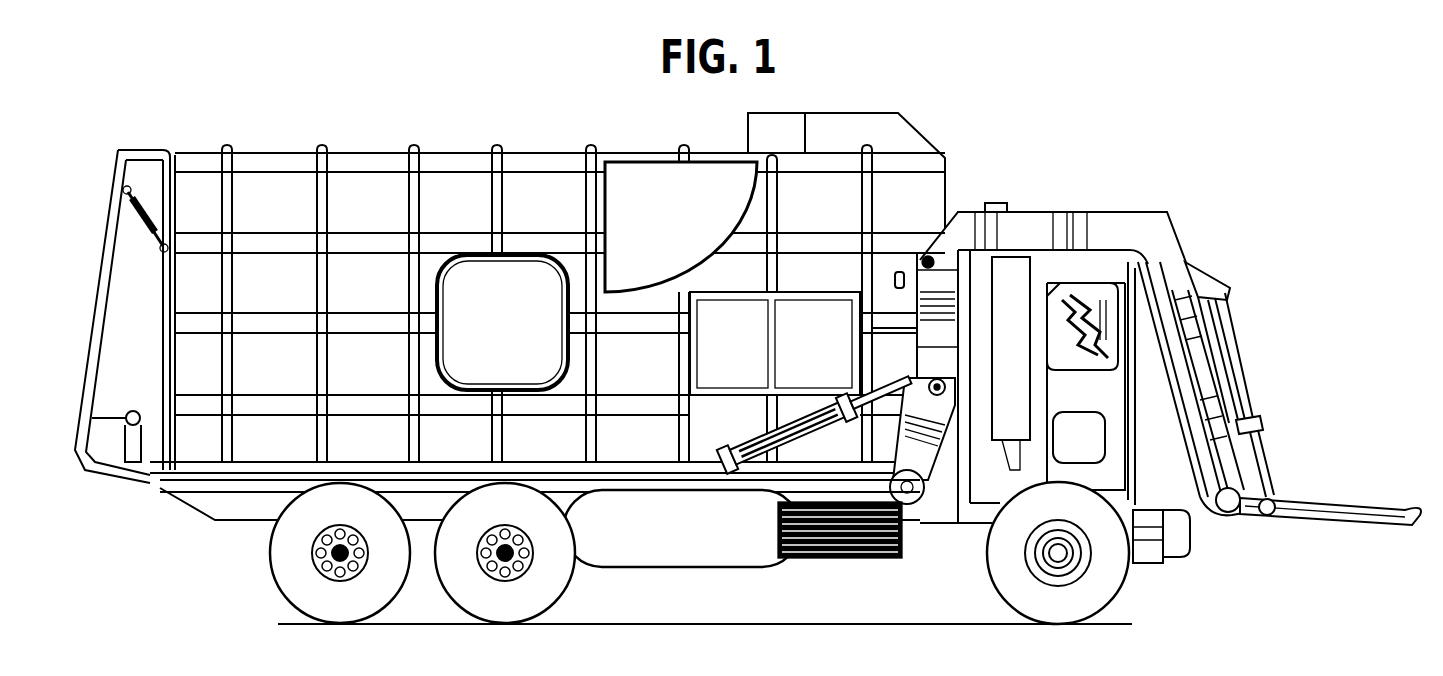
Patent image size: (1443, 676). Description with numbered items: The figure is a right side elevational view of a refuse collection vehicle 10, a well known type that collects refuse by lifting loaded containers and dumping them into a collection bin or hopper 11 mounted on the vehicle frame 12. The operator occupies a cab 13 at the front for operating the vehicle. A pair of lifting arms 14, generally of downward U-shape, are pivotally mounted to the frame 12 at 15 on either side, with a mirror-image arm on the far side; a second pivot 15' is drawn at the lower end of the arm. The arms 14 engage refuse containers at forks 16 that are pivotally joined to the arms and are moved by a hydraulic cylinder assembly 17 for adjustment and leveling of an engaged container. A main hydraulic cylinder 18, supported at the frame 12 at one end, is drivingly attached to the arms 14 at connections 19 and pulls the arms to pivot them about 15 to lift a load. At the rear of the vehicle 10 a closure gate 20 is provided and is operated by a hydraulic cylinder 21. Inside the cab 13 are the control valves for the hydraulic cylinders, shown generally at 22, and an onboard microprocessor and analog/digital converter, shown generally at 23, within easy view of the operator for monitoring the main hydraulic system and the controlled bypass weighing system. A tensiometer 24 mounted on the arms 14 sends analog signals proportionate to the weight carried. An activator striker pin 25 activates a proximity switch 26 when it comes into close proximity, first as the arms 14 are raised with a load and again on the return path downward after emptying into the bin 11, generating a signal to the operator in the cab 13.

The refuse collection vehicle 10 is at (1122, 137).
The collection bin or hopper 11 is at (380, 146).
The vehicle frame 12 is at (195, 515).
The cab 13 is at (1185, 548).
The lifting arms 14 is at (1140, 218).
The pivot 15 is at (1085, 411).
The lift arm pivot 15' is at (1256, 524).
The forks 16 is at (1342, 505).
The hydraulic cylinder assembly 17 is at (1240, 330).
The main hydraulic cylinder 18 is at (750, 472).
The connections 19 is at (932, 383).
The closure gate 20 is at (102, 160).
The hydraulic cylinder 21 is at (125, 250).
The control valves 22 is at (1048, 350).
The onboard microprocessor and analog/digital converter 23 is at (1098, 300).
The tensiometer 24 is at (1008, 210).
The activator striker pin 25 is at (932, 255).
The proximity switch 26 is at (906, 290).